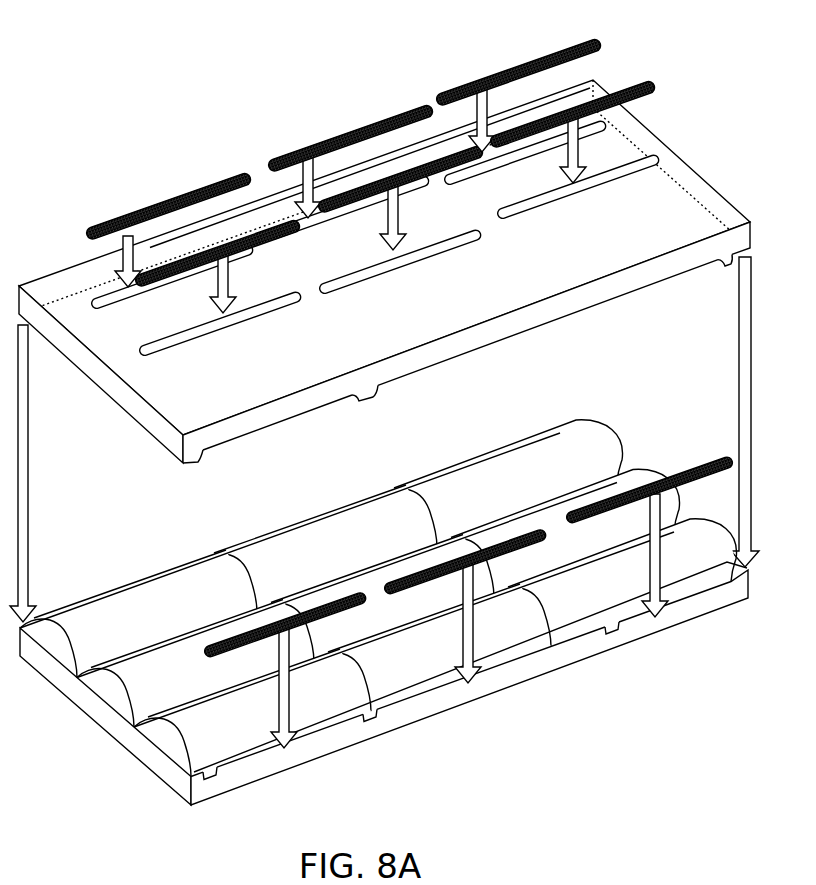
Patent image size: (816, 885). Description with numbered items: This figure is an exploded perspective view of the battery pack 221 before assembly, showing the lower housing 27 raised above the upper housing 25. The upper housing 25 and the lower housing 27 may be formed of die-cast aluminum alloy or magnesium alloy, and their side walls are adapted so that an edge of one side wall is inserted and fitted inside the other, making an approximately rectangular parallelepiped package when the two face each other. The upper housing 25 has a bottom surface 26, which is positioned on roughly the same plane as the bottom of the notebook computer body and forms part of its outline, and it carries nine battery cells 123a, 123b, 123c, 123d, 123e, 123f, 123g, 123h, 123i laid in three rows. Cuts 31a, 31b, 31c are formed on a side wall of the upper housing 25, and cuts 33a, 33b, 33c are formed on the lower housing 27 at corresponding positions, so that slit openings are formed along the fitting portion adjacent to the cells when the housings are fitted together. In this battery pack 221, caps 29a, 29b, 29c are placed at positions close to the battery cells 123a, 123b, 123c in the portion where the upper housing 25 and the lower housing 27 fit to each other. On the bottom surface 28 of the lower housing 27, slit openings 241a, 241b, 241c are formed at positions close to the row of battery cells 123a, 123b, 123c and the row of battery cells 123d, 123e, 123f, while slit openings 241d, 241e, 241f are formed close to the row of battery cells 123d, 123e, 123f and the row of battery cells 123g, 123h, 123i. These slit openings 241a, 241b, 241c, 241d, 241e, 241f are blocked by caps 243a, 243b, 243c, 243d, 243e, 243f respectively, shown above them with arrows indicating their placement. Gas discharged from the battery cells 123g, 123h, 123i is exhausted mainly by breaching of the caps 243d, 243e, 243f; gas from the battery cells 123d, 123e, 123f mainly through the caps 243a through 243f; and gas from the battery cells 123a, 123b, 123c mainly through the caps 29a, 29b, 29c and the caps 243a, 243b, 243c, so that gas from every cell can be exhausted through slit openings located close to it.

The battery pack 221 is at (352, 77).
The cap 243a is at (247, 252).
The cap 243b is at (421, 187).
The cap 243c is at (608, 110).
The cap 243d is at (192, 194).
The cap 243e is at (343, 137).
The cap 243f is at (505, 78).
The slit opening 241a is at (208, 336).
The slit opening 241b is at (386, 272).
The slit opening 241c is at (552, 208).
The slit opening 241d is at (133, 299).
The slit opening 241e is at (310, 232).
The slit opening 241f is at (473, 171).
The bottom surface of the lower housing 28 is at (316, 337).
The lower housing 27 is at (126, 413).
The cut 33a is at (267, 430).
The cut 33b is at (422, 372).
The cut 33c is at (605, 300).
The upper housing 25 is at (62, 679).
The bottom surface of the upper housing 26 is at (540, 690).
The cut 31a is at (274, 763).
The cut 31b is at (433, 705).
The cut 31c is at (617, 636).
The cap 29a is at (232, 638).
The cap 29b is at (395, 578).
The cap 29c is at (586, 510).
The battery cell 123a is at (188, 738).
The battery cell 123b is at (380, 679).
The battery cell 123c is at (575, 591).
The battery cell 123d is at (140, 688).
The battery cell 123e is at (381, 604).
The battery cell 123f is at (557, 533).
The battery cell 123g is at (88, 639).
The battery cell 123h is at (270, 570).
The battery cell 123i is at (478, 491).